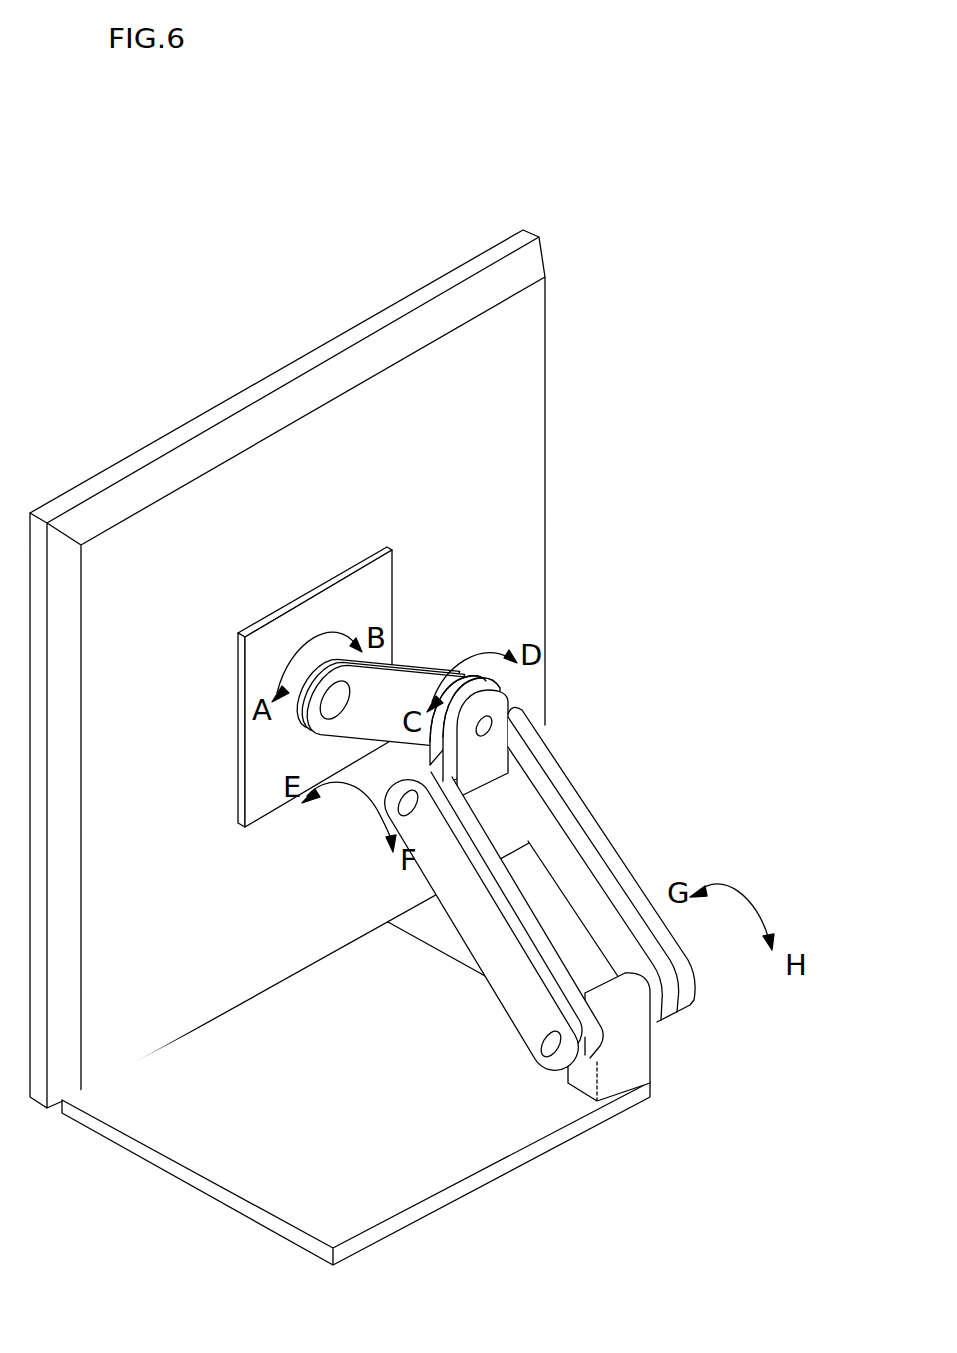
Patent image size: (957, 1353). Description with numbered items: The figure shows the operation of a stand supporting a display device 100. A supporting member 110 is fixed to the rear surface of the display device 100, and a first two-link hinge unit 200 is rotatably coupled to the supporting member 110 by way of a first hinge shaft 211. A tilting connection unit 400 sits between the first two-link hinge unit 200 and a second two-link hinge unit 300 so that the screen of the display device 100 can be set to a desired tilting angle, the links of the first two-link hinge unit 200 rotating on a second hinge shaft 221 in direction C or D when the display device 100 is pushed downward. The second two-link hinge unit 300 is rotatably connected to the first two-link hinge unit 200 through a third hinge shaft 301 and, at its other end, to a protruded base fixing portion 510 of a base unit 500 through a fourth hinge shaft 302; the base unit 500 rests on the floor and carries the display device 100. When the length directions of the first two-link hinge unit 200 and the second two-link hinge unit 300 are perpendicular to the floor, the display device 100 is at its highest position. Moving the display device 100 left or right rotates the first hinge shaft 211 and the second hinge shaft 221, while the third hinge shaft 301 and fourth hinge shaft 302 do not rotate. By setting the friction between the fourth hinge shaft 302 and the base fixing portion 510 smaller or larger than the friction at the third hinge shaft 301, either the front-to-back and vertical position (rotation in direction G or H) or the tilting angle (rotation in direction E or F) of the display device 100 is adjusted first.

The display device 100 is at (563, 208).
The supporting member 110 is at (258, 745).
The first two-link hinge unit 200 is at (417, 646).
The first hinge shaft 211 is at (358, 676).
The second hinge shaft 221 is at (488, 727).
The second two-link hinge unit 300 is at (615, 805).
The third hinge shaft 301 is at (405, 805).
The fourth hinge shaft 302 is at (549, 1048).
The tilting connection unit 400 is at (512, 692).
The base unit 500 is at (425, 1165).
The base fixing portion 510 is at (640, 1043).